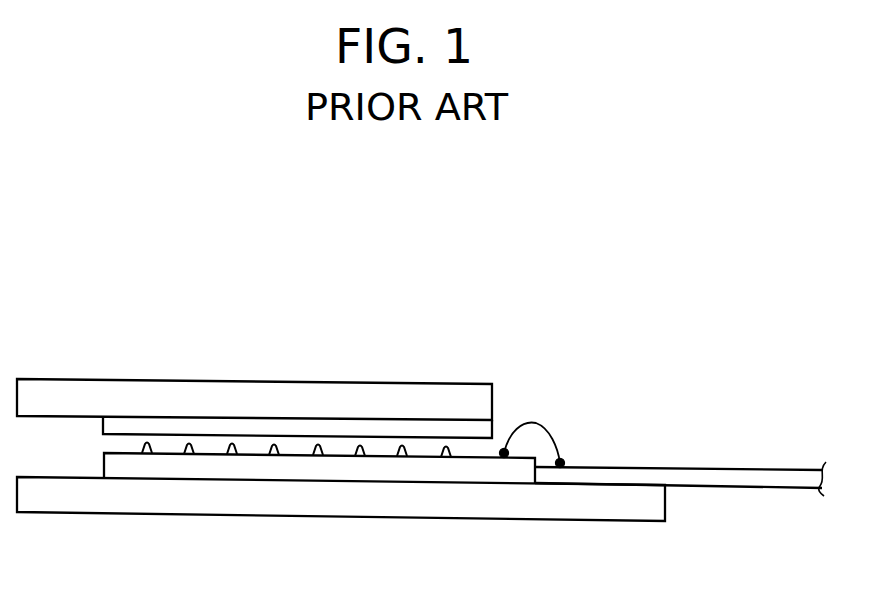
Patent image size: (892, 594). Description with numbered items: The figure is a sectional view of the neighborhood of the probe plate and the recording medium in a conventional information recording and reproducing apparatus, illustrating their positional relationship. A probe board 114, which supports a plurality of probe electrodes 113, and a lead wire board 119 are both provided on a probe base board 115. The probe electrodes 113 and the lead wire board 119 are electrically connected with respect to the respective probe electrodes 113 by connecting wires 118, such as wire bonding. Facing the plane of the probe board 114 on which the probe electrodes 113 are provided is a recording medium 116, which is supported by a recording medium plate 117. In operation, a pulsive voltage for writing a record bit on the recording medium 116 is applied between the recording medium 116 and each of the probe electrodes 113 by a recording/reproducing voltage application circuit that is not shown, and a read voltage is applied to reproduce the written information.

The probe electrodes 113 is at (148, 446).
The probe board 114 is at (197, 465).
The probe base board 115 is at (108, 500).
The recording medium 116 is at (122, 425).
The recording medium plate 117 is at (58, 387).
The connecting wires 118 is at (542, 422).
The lead wire board 119 is at (632, 477).